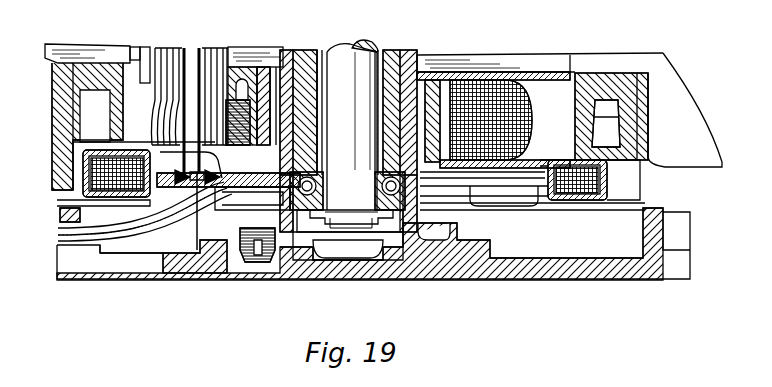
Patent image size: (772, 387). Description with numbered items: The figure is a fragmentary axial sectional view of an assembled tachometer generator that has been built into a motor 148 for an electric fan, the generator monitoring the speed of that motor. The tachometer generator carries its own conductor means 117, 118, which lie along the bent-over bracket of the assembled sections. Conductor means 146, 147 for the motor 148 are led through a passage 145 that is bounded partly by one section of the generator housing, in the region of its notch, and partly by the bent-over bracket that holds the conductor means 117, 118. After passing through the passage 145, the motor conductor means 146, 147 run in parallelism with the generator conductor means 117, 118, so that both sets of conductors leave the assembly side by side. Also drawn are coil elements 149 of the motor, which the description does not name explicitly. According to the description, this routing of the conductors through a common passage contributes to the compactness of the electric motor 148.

The conductor means 117 is at (118, 228).
The conductor means 118 is at (132, 228).
The passage 145 is at (198, 250).
The conductor means 146 is at (185, 70).
The conductor means 147 is at (198, 62).
The motor 148 is at (487, 282).
The coil 149 is at (105, 197).